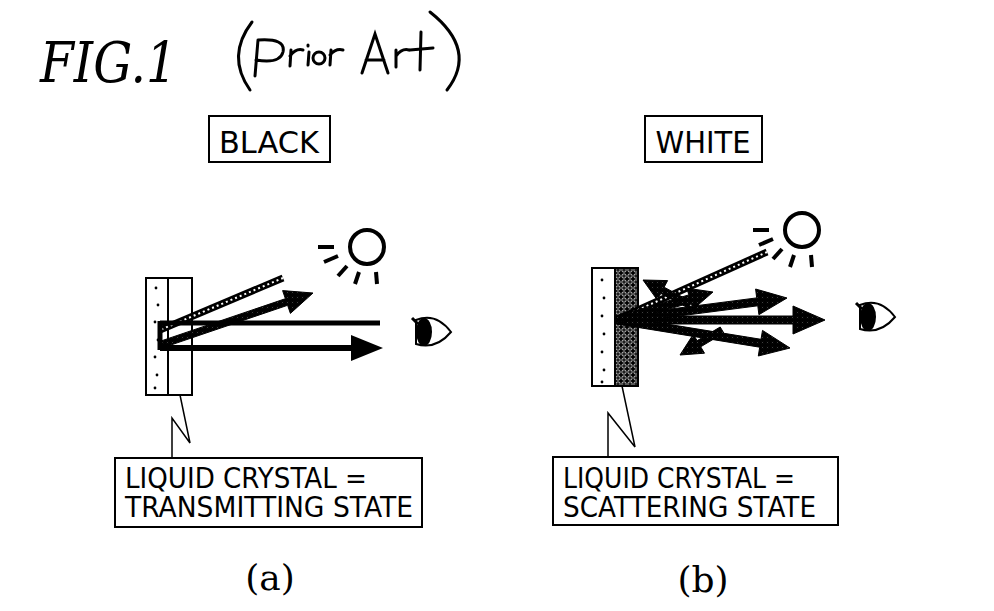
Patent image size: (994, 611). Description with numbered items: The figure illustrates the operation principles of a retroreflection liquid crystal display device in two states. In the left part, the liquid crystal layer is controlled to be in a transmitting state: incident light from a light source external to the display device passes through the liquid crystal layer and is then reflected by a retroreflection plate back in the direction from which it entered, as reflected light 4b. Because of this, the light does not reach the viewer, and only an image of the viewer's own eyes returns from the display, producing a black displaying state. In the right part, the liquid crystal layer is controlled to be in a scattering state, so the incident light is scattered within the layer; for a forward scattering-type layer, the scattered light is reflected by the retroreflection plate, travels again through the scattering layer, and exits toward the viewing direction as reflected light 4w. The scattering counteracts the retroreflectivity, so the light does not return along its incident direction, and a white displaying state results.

The reflected light 4b is at (218, 330).
The reflected light 4w is at (727, 343).